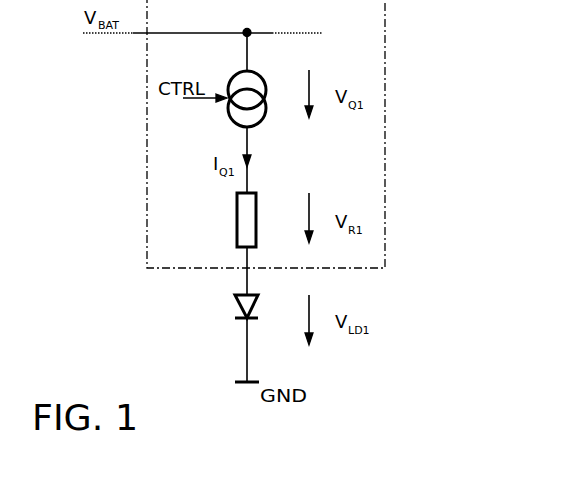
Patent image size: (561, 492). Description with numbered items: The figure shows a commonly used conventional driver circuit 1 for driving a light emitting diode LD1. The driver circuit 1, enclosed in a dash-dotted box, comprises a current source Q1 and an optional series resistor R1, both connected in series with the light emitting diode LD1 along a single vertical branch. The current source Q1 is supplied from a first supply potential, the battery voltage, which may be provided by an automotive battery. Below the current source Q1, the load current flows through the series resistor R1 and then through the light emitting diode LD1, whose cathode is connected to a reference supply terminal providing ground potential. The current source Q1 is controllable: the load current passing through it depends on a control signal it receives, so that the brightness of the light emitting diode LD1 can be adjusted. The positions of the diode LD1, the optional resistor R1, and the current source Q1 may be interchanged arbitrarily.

The driver circuit 1 is at (385, 131).
The current source Q1 is at (261, 104).
The series resistor R1 is at (265, 220).
The light emitting diode LD1 is at (264, 321).